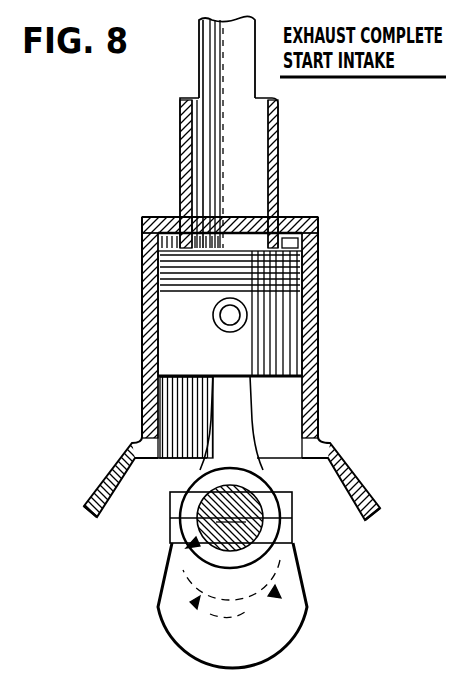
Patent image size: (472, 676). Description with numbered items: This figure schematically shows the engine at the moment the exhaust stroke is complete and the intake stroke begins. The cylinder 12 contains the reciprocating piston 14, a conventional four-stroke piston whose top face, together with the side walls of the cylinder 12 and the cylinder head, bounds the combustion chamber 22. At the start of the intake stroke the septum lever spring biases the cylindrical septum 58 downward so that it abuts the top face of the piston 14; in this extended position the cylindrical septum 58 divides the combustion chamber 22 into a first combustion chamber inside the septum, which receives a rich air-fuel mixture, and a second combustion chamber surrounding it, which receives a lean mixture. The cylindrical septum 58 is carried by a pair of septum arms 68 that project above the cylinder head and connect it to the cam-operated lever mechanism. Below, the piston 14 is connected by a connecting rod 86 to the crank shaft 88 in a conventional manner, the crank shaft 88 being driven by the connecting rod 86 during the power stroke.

The cylinder 12 is at (313, 353).
The reciprocating piston 14 is at (178, 336).
The combustion chamber 22 is at (160, 237).
The cylindrical septum 58 is at (192, 150).
The septum arms 68 is at (214, 63).
The connecting rod 86 is at (224, 420).
The crank shaft 88 is at (258, 522).